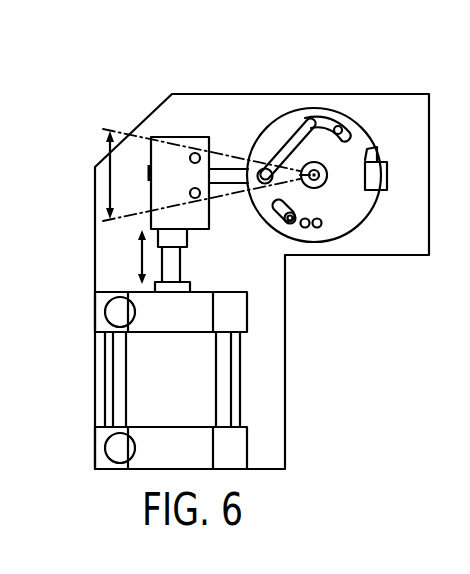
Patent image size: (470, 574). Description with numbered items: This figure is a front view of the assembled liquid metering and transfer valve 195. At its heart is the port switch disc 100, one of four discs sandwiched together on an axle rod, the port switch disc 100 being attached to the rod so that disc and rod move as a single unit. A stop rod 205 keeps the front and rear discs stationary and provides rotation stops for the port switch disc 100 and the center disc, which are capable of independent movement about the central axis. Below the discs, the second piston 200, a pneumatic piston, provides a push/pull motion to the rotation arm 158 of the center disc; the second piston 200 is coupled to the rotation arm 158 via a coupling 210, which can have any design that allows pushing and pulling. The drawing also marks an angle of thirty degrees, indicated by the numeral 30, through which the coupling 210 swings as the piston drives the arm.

The port switch disc 100 is at (272, 118).
The rotation arm 158 is at (224, 174).
The liquid metering and transfer valve 195 is at (193, 80).
The second piston 200 is at (148, 382).
The stop rod 205 is at (381, 175).
The coupling 210 is at (167, 158).
The rotation angle 30 is at (106, 168).